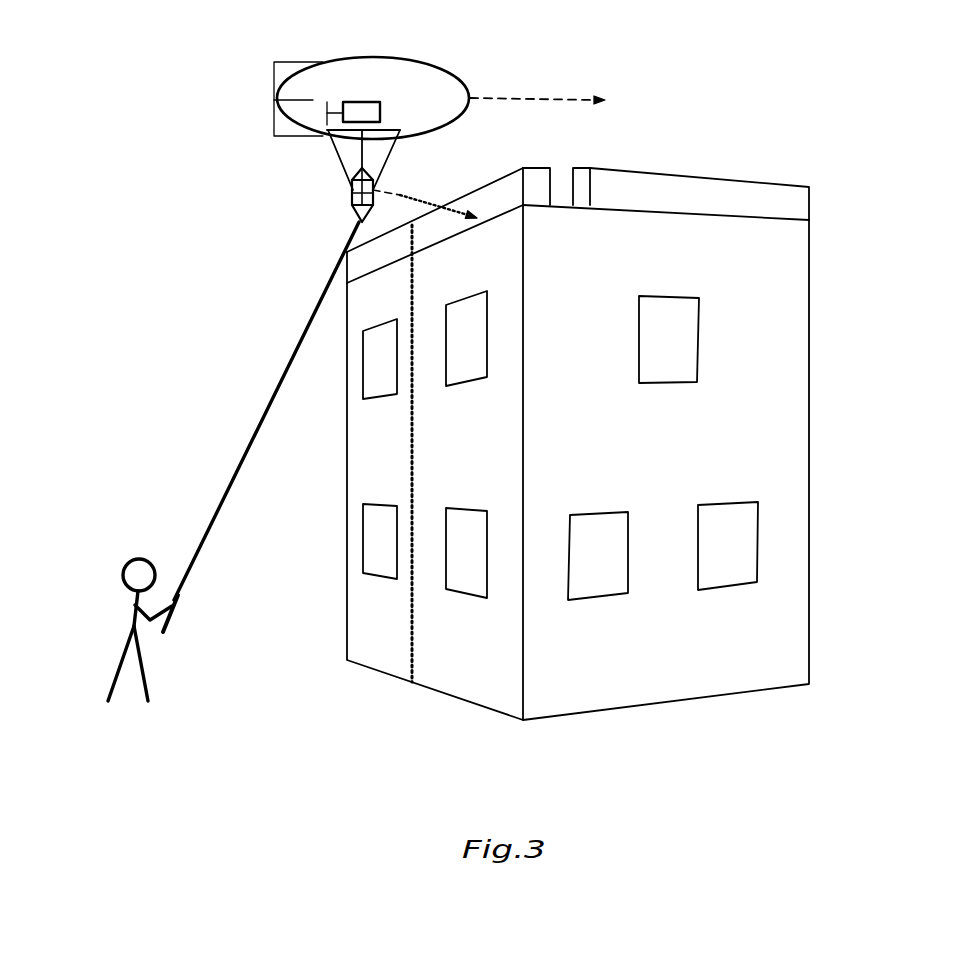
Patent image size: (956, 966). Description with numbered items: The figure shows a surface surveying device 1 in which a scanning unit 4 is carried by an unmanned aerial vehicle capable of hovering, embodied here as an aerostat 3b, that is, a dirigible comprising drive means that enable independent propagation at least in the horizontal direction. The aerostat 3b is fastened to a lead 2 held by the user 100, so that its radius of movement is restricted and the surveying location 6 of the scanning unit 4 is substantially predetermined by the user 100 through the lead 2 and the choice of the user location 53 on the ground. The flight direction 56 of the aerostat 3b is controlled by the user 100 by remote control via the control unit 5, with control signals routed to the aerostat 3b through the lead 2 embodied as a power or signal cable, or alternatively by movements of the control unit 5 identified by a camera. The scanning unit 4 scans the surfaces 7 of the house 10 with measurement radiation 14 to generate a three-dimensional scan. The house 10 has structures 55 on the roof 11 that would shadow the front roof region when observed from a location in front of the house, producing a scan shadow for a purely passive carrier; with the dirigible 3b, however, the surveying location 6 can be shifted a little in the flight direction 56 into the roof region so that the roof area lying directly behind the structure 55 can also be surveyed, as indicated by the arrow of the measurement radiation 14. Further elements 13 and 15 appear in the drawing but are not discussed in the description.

The surface surveying device 1 is at (421, 80).
The lead 2 is at (259, 411).
The aerostat 3b is at (267, 87).
The scanning unit 4 is at (350, 190).
The control unit 5 is at (229, 613).
The surveying location 6 is at (314, 188).
The surfaces 7 is at (649, 470).
The house 10 is at (636, 665).
The roof 11 is at (592, 202).
The control unit 13 is at (381, 73).
The measurement radiation 14 is at (443, 178).
The vertical line 15 is at (452, 453).
The user location 53 is at (230, 712).
The roof structures 55 is at (648, 190).
The flight direction 56 is at (571, 70).
The user 100 is at (117, 599).